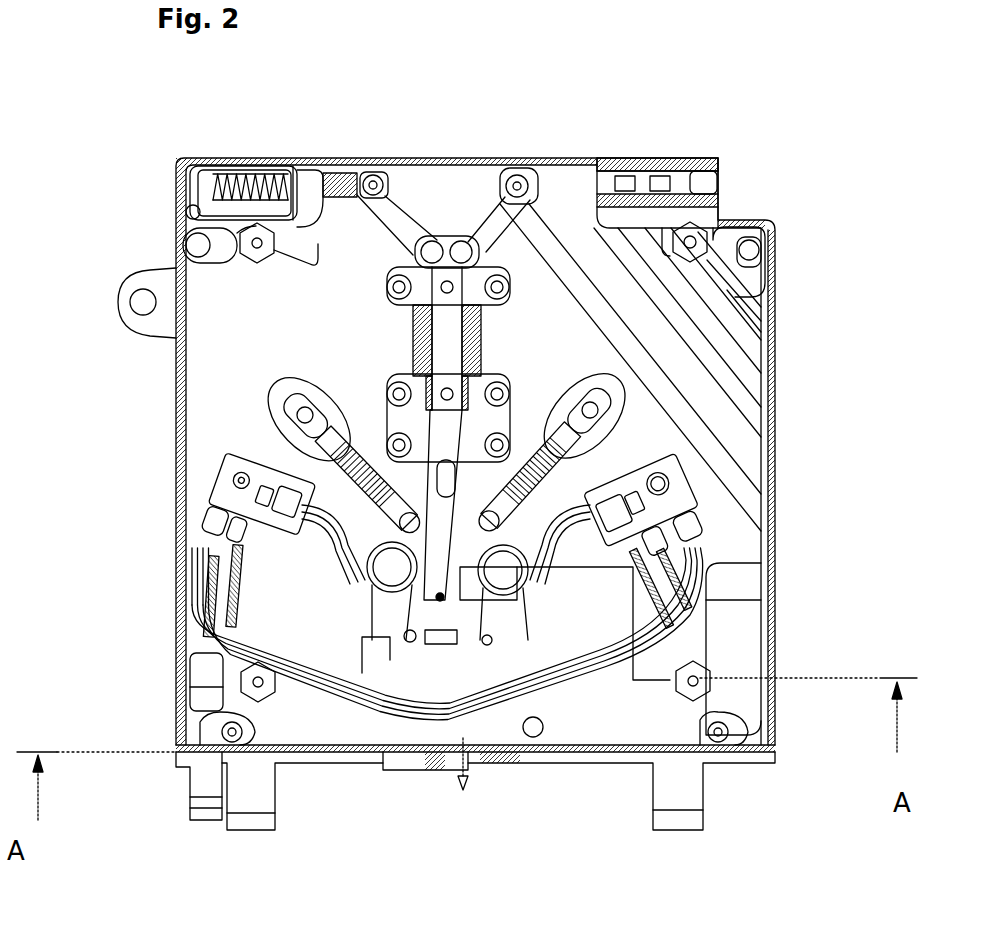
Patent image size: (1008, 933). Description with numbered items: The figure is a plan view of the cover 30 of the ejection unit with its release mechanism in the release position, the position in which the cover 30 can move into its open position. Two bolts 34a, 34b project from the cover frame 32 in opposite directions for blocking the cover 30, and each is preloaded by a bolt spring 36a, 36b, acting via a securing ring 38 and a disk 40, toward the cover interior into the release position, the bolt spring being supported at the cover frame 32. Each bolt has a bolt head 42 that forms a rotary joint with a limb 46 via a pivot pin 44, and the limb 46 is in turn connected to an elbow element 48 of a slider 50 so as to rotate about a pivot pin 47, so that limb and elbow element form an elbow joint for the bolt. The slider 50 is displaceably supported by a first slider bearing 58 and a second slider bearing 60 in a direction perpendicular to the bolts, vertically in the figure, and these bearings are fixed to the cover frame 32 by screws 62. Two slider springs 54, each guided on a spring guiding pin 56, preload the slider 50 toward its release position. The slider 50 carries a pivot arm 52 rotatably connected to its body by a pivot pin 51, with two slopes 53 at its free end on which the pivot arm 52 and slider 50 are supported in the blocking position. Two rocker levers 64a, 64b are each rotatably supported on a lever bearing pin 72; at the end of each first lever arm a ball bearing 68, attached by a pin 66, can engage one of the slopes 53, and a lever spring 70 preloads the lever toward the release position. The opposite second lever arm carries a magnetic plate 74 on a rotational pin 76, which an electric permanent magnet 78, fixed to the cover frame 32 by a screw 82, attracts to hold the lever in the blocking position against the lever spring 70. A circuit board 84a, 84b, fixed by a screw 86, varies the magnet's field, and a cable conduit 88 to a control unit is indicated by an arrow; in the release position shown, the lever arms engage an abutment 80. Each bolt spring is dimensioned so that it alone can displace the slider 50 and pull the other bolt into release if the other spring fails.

The cover 30 is at (680, 98).
The cover frame 32 is at (430, 160).
The bolt 34a is at (333, 186).
The bolt 34b is at (615, 190).
The bolt spring 36a is at (232, 165).
The bolt spring 36b is at (766, 243).
The securing ring 38 is at (742, 280).
The disk 40 is at (640, 172).
The bolt head 42 is at (765, 411).
The pivot pin 44 is at (765, 356).
The limb 46 is at (765, 464).
The pivot pin 47 is at (462, 242).
The elbow element 48 is at (290, 180).
The slider 50 is at (447, 340).
The pivot pin 51 is at (445, 484).
The pivot arm 52 is at (250, 670).
The slopes 53 is at (440, 597).
The slider springs 54 is at (300, 314).
The spring guiding pin 56 is at (405, 345).
The first slider bearing 58 is at (400, 323).
The second slider bearing 60 is at (385, 420).
The screws 62 is at (383, 288).
The rocker lever 64a is at (370, 597).
The rocker lever 64b is at (522, 592).
The pin 66 is at (383, 528).
The ball bearing 68 is at (370, 656).
The lever spring 70 is at (325, 449).
The lever bearing pin 72 is at (502, 560).
The magnetic plate 74 is at (235, 755).
The rotational pin 76 is at (486, 646).
The electric permanent magnet 78 is at (770, 703).
The abutment 80 is at (470, 632).
The screw 82 is at (765, 636).
The circuit board 84a is at (205, 510).
The circuit board 84b is at (700, 500).
The screw 86 is at (762, 586).
The cable conduit 88 is at (462, 777).